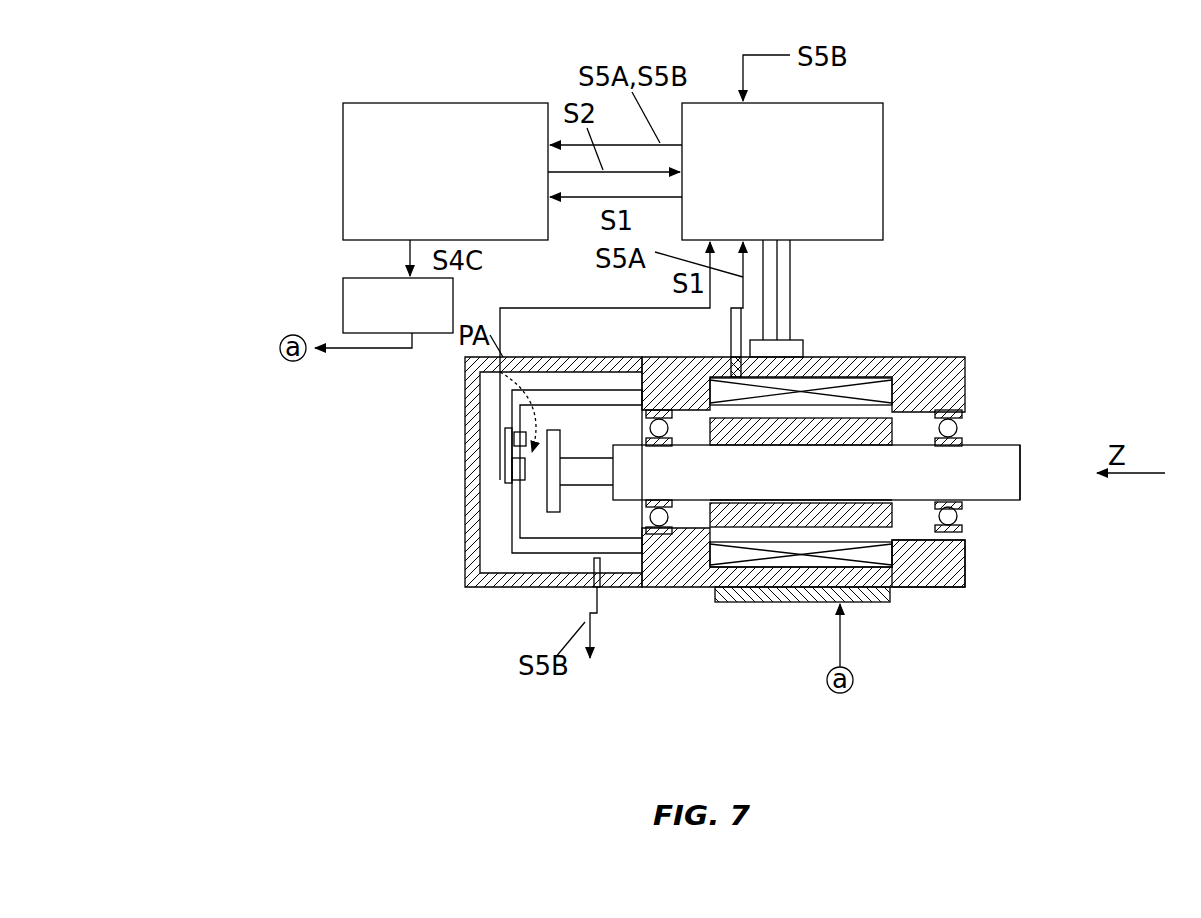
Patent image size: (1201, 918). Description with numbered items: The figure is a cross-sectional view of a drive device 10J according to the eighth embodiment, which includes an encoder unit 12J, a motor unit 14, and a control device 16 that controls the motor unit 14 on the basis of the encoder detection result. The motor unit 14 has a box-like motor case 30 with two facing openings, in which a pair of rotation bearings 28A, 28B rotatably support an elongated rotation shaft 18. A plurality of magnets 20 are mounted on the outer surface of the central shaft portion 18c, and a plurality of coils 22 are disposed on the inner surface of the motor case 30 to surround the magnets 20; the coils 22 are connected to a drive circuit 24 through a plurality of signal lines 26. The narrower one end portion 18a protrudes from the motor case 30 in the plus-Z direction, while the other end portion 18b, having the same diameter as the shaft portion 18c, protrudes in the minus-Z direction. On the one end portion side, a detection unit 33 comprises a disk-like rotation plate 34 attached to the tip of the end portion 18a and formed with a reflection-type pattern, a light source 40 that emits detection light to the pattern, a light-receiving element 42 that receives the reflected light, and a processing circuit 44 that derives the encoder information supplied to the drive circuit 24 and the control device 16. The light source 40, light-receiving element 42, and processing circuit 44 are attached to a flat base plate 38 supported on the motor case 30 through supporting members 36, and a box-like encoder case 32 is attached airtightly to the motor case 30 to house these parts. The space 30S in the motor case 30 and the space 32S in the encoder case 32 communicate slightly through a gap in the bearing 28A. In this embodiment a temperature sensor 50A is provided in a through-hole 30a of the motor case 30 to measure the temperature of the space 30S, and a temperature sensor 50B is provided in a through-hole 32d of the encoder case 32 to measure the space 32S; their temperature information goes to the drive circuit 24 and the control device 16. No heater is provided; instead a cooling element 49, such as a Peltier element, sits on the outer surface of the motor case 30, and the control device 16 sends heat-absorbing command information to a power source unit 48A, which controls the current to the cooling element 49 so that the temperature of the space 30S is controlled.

The drive device 10J is at (1155, 122).
The encoder unit 12J is at (262, 477).
The motor unit 14 is at (1195, 330).
The control device 16 is at (394, 171).
The rotation shaft 18 is at (838, 447).
The one end portion 18a is at (640, 541).
The other end portion 18b is at (1062, 493).
The shaft portion 18c is at (860, 503).
The magnet 20 is at (847, 445).
The coil 22 is at (840, 439).
The drive circuit 24 is at (845, 169).
The signal line 26 is at (848, 284).
The rotation bearing 28A is at (787, 602).
The rotation bearing 28B is at (1004, 557).
The motor case 30 is at (807, 355).
The through-hole 30a is at (748, 355).
The space 30S is at (690, 408).
The encoder case 32 is at (476, 472).
The space 32S is at (577, 431).
The through-hole 32d is at (656, 649).
The detection unit 33 is at (294, 545).
The rotation plate 34 is at (463, 593).
The supporting member 36 is at (543, 615).
The base plate 38 is at (489, 540).
The light source 40 is at (421, 448).
The light-receiving element 42 is at (465, 523).
The processing circuit 44 is at (421, 515).
The power source unit 48A is at (337, 290).
The cooling element 49 is at (896, 644).
The temperature sensor 50A is at (723, 360).
The temperature sensor 50B is at (672, 617).